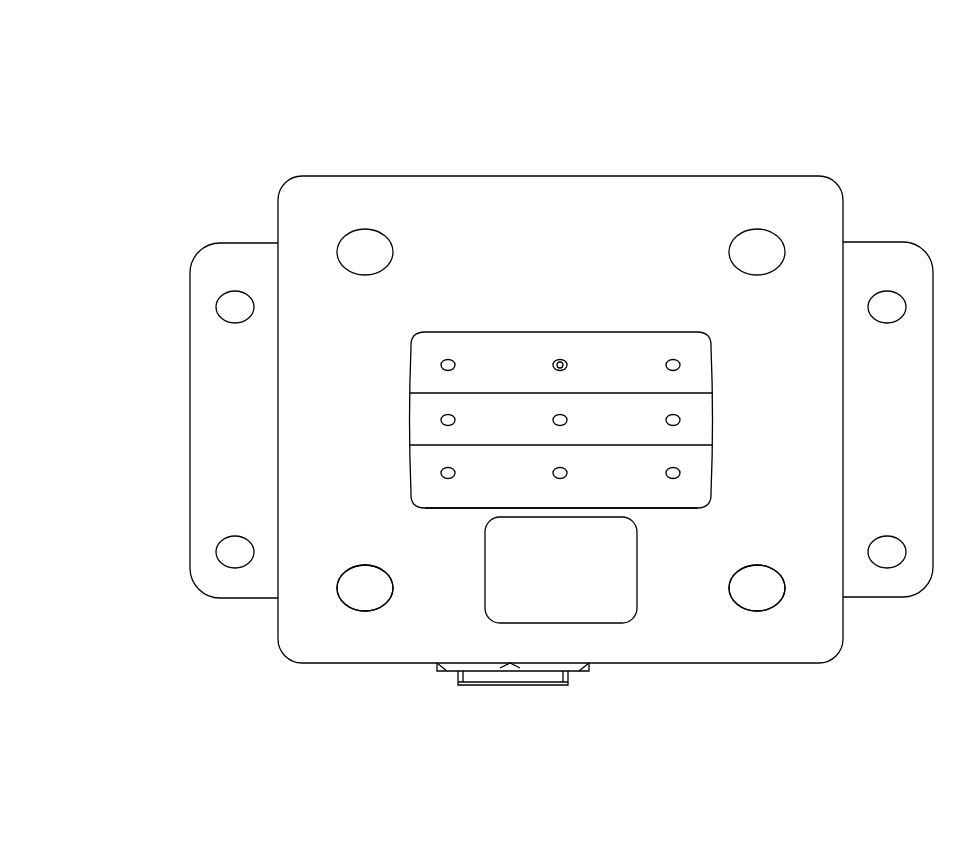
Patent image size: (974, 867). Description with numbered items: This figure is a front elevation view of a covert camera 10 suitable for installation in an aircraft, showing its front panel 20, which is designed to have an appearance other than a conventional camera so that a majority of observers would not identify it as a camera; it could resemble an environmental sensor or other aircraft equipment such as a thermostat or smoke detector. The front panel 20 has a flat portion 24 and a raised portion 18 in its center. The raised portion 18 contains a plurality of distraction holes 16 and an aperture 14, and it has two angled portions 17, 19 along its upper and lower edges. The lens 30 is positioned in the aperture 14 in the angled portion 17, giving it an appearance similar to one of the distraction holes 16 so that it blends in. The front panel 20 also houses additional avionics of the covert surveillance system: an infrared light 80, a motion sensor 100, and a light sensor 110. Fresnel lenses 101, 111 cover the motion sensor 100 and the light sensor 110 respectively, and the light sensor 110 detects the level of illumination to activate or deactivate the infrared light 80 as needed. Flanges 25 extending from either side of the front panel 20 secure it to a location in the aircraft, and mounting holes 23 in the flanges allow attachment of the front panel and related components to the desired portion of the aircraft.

The camera 10 is at (78, 118).
The front panel 20 is at (410, 135).
The flat portion 24 is at (392, 198).
The flanges 25 is at (210, 283).
The mounting holes 23 is at (228, 557).
The angled portion 17 is at (706, 352).
The raised portion 18 is at (628, 433).
The angled portion 19 is at (706, 478).
The distraction holes 16 is at (442, 368).
The aperture 14 is at (556, 361).
The lens 30 is at (565, 358).
The infrared light 80 is at (510, 603).
The motion sensor 100 is at (358, 593).
The fresnel lens 101 is at (364, 611).
The light sensor 110 is at (766, 596).
The fresnel lens 111 is at (757, 611).